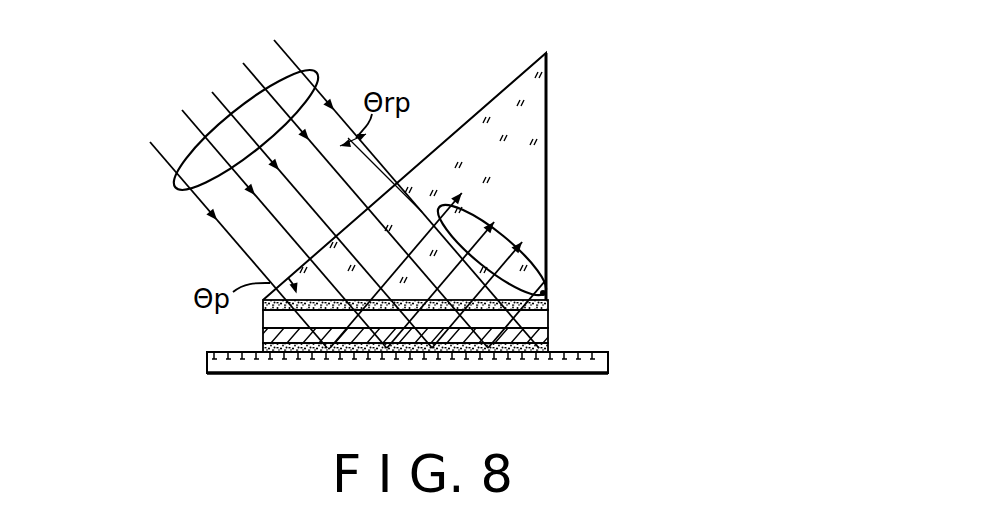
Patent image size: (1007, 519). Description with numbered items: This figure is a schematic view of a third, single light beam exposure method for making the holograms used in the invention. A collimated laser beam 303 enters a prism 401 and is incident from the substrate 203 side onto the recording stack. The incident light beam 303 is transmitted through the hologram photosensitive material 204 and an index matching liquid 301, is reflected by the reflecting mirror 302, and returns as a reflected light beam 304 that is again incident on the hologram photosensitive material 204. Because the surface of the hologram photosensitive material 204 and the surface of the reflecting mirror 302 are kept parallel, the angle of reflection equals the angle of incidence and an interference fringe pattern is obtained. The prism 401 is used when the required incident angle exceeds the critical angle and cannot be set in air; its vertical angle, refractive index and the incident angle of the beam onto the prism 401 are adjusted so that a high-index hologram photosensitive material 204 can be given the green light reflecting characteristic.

The prism 401 is at (537, 117).
The laser beam 303 is at (182, 188).
The reflected light beam 304 is at (483, 213).
The index matching liquid 301 is at (550, 307).
The substrate 203 is at (549, 318).
The hologram photosensitive material 204 is at (549, 335).
The reflecting mirror 302 is at (610, 359).